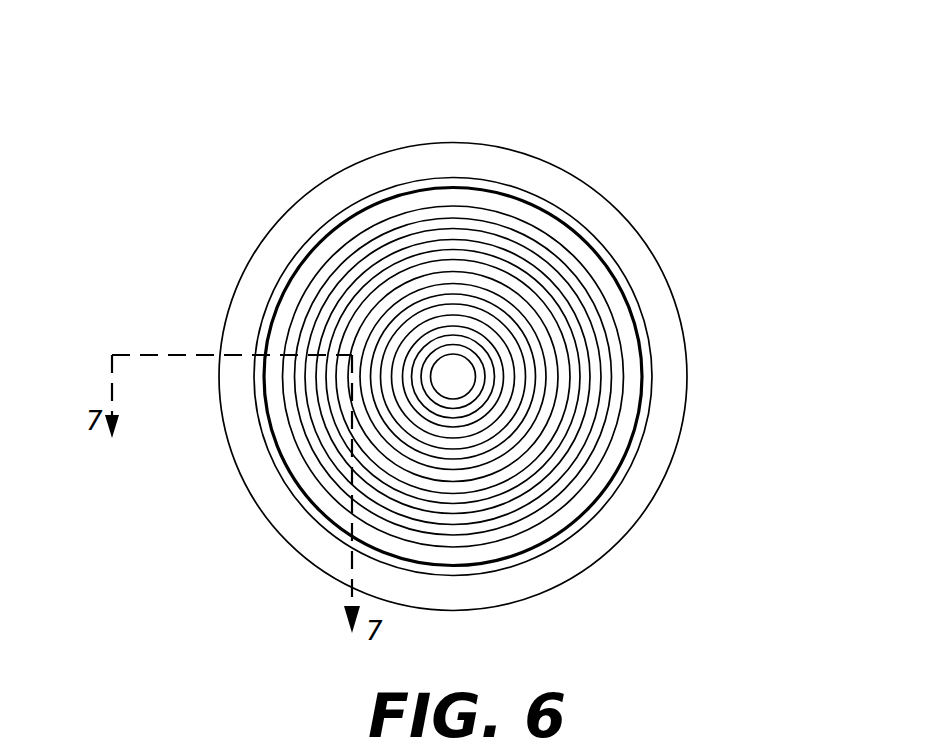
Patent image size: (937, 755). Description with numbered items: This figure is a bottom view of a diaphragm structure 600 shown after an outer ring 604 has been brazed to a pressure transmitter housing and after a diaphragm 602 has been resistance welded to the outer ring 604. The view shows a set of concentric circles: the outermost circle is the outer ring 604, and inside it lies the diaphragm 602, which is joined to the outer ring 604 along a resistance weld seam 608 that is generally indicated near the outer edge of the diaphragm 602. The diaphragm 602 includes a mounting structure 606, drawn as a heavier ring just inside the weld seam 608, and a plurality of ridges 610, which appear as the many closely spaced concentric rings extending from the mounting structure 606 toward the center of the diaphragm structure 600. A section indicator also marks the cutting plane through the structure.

The diaphragm structure 600 is at (195, 44).
The diaphragm 602 is at (390, 216).
The outer ring 604 is at (254, 258).
The mounting structure 606 is at (268, 334).
The resistance weld seam 608 is at (262, 433).
The ridges 610 is at (342, 460).